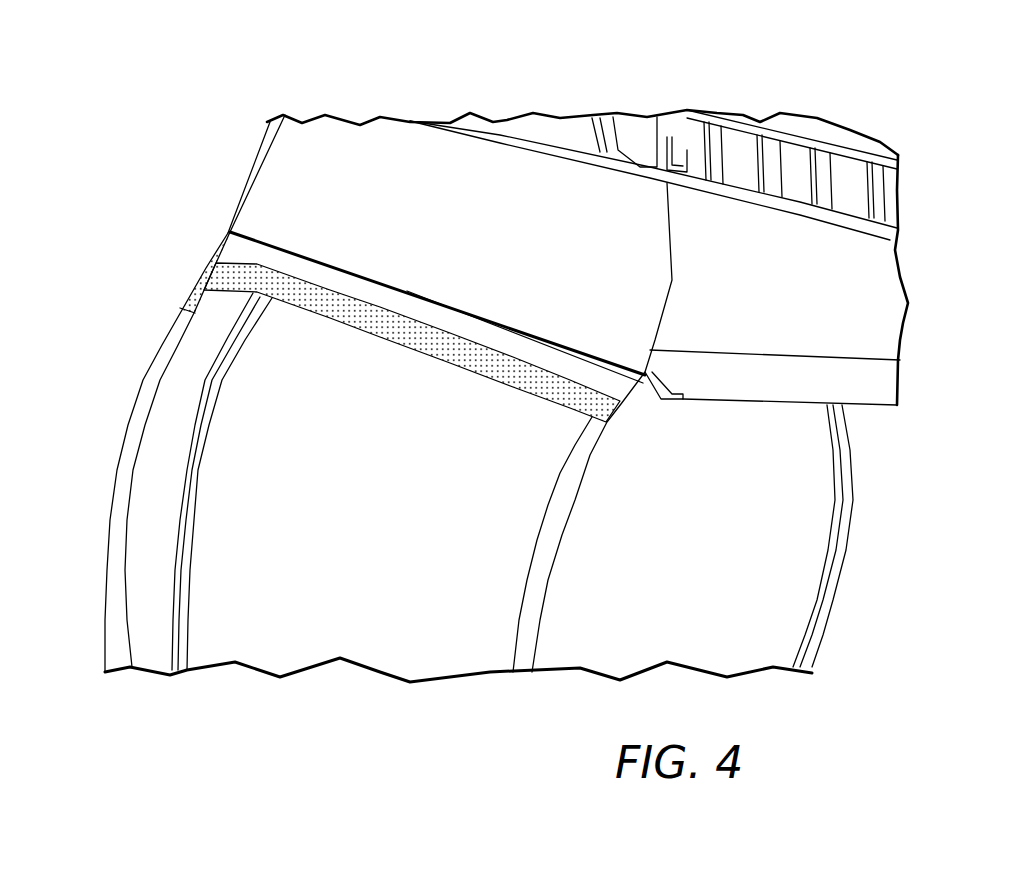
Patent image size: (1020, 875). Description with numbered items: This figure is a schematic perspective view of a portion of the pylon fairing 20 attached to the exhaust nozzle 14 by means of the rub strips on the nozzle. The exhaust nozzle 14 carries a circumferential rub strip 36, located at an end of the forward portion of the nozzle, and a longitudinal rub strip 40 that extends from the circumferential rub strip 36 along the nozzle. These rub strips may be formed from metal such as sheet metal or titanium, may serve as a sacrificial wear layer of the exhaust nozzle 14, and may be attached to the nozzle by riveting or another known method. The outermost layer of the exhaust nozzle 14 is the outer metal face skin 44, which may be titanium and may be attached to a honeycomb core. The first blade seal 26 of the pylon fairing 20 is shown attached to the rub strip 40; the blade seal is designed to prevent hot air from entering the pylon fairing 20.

The exhaust nozzle 14 is at (90, 391).
The pylon fairing 20 is at (163, 166).
The first blade seal 26 is at (502, 341).
The circumferential rub strip 36 is at (205, 282).
The rub strip 40 is at (405, 343).
The outer metal face skin 44 is at (350, 511).